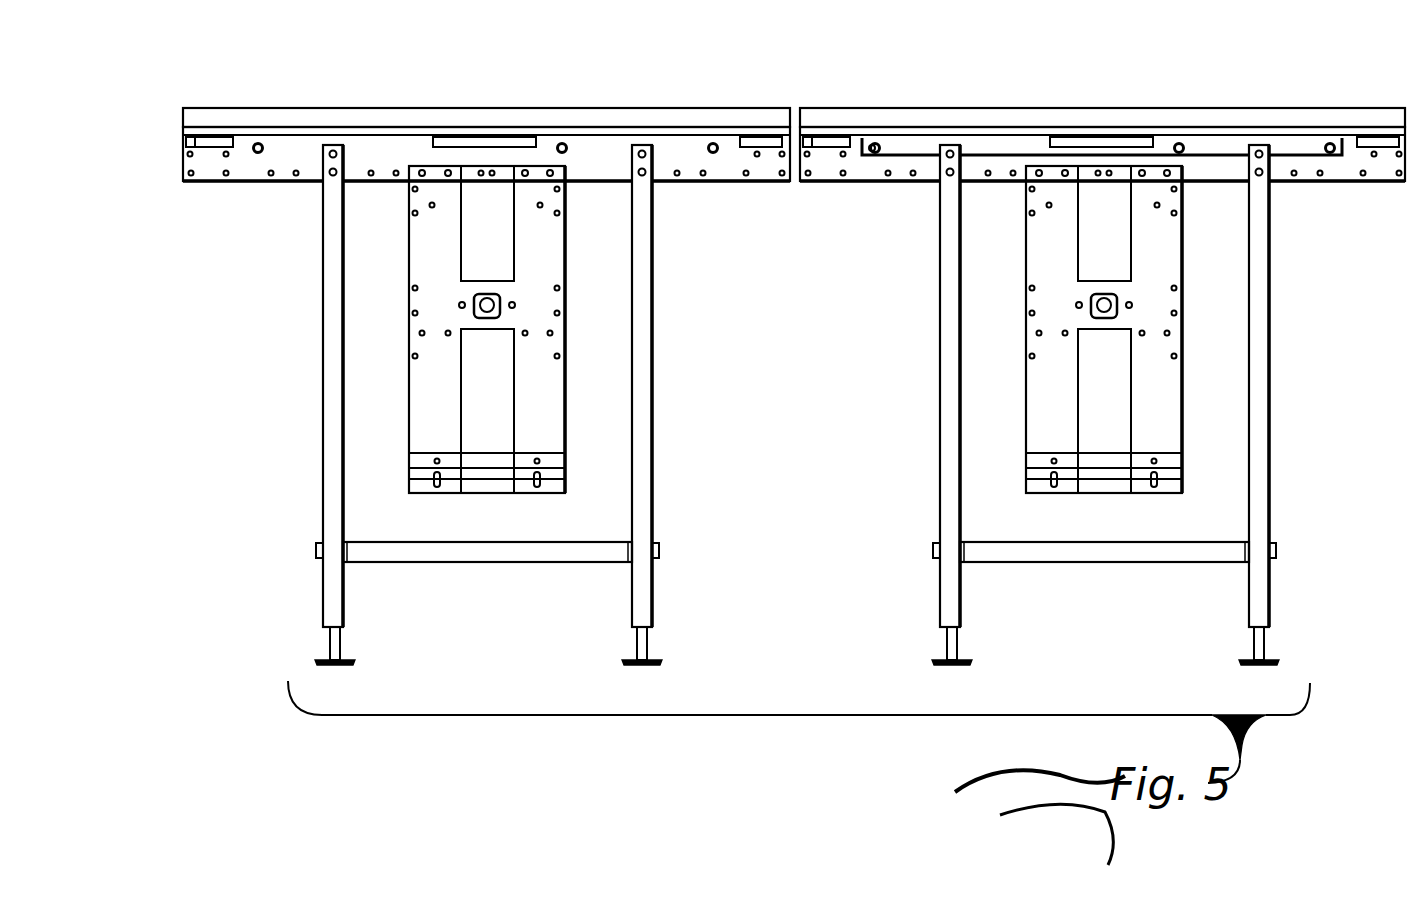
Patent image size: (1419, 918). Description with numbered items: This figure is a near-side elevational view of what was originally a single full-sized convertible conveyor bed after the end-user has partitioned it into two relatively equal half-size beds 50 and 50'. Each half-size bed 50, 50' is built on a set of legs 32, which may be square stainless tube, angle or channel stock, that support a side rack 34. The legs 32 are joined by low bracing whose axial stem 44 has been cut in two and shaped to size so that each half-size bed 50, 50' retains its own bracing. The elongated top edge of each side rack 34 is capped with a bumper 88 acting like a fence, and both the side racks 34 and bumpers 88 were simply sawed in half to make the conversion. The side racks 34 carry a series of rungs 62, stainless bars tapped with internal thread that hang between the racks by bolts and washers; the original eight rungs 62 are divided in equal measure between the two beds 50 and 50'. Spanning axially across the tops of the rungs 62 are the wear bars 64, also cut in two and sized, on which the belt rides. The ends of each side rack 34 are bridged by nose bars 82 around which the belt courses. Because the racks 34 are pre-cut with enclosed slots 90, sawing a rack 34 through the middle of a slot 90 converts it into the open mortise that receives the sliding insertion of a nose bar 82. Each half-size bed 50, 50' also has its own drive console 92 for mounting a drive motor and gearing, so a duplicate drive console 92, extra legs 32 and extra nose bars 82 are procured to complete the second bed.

The half-size bed 50 is at (486, 346).
The half-size bed 50' is at (1102, 346).
The bumper 88 is at (592, 113).
The side rack 34 is at (288, 172).
The rung 62 is at (258, 152).
The wear bar 64 is at (1307, 147).
The leg 32 is at (332, 432).
The elongated stem 44 is at (551, 553).
The drive console 92 is at (547, 415).
The enclosed slot 90 is at (528, 143).
The nose bar 82 is at (775, 150).